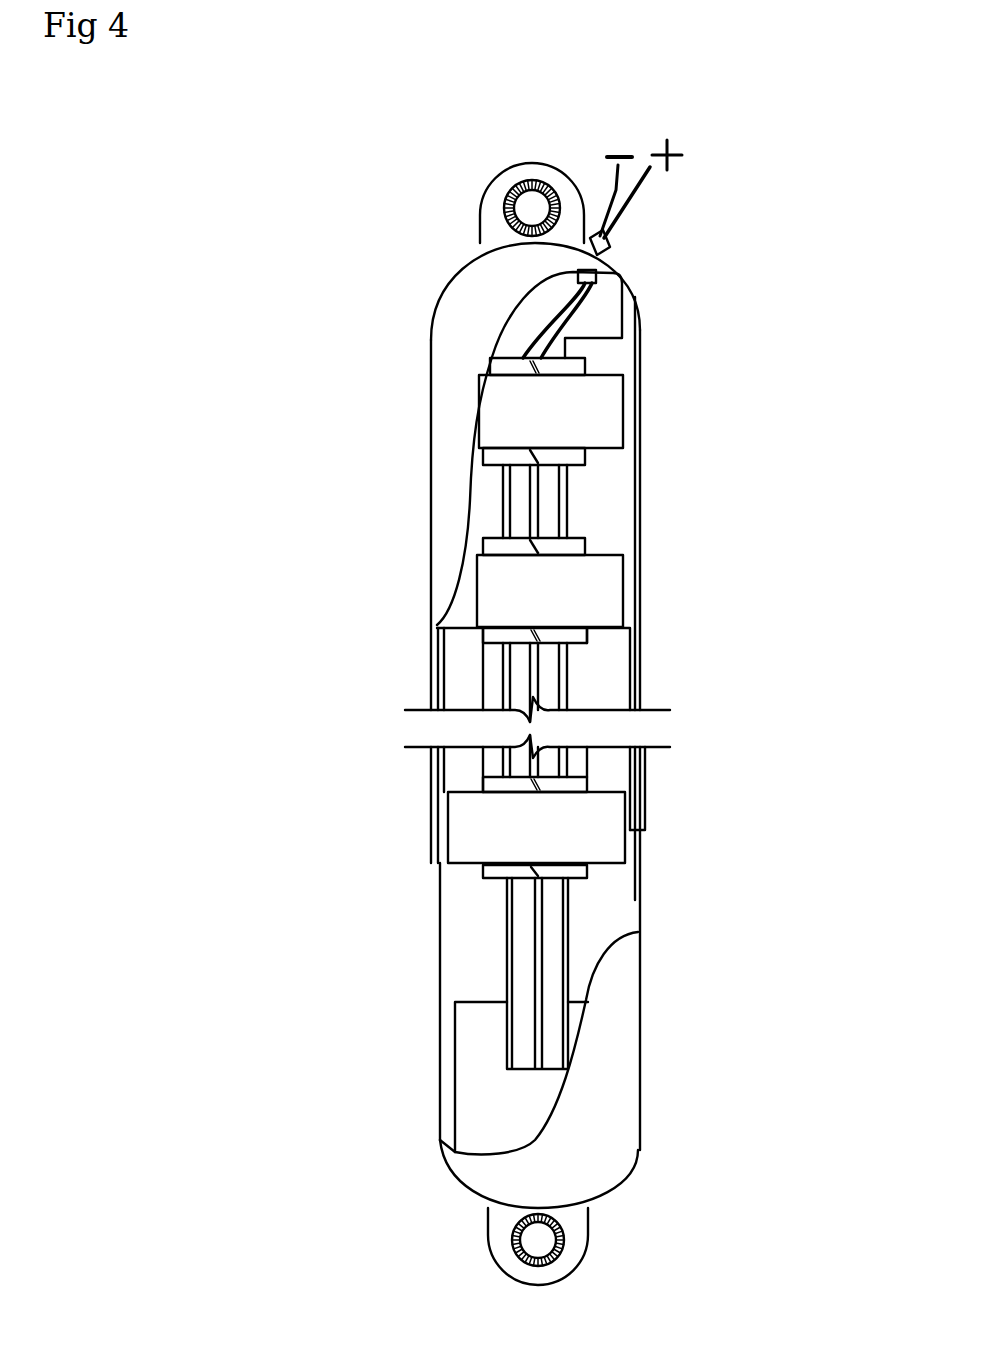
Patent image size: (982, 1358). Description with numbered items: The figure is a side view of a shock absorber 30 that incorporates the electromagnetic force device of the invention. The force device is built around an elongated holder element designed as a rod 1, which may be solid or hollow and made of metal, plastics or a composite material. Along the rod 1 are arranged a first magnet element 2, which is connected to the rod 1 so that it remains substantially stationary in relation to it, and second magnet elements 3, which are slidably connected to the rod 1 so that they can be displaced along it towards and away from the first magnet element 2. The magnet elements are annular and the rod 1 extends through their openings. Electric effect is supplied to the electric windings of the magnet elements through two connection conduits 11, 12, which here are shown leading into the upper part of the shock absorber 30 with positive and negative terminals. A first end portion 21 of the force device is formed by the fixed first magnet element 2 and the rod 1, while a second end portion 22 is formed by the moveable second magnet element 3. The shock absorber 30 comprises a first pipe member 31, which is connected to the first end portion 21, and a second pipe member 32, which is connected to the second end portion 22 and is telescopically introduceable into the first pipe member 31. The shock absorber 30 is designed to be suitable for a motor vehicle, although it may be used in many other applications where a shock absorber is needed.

The elongated holder element 1 is at (513, 497).
The first magnet element 2 is at (542, 412).
The second magnet element 3 is at (477, 585).
The connection conduit 11 is at (645, 178).
The connection conduit 12 is at (625, 195).
The first end portion 21 is at (557, 360).
The second end portion 22 is at (490, 882).
The shock absorber 30 is at (653, 412).
The first pipe member 31 is at (453, 303).
The second pipe member 32 is at (445, 1060).